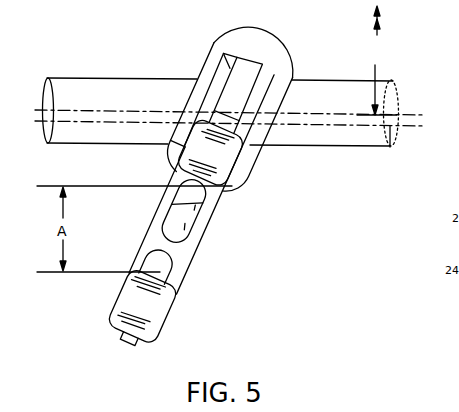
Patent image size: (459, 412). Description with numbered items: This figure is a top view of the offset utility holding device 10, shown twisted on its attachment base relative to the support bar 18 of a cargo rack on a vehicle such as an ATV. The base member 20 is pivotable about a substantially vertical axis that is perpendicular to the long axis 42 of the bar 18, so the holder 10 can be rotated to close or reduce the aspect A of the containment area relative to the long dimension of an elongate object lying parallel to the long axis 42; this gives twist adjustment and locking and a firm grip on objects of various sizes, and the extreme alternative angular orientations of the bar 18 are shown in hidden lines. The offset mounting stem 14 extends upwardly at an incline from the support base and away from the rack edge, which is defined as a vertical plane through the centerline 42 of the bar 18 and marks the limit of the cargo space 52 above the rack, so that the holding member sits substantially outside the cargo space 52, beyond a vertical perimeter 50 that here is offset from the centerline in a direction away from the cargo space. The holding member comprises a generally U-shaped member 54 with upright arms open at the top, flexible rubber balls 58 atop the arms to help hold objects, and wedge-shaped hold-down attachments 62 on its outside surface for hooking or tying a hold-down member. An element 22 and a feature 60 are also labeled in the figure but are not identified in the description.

The offset utility holding device 10 is at (274, 208).
The offset mounting stem 14 is at (250, 88).
The bar 18 is at (130, 93).
The base member 20 is at (274, 40).
The jaw wall 22 is at (215, 84).
The long axis 42 is at (408, 114).
The vertical perimeter 50 is at (364, 127).
The cargo space 52 is at (377, 81).
The U-shaped member 54 is at (153, 238).
The flexible rubber balls 58 is at (223, 159).
The slot 60 is at (203, 198).
The wedge-shaped hold-down attachments 62 is at (124, 345).